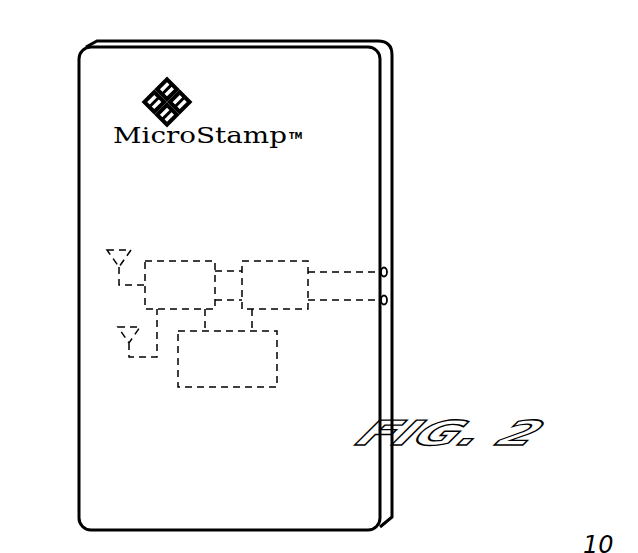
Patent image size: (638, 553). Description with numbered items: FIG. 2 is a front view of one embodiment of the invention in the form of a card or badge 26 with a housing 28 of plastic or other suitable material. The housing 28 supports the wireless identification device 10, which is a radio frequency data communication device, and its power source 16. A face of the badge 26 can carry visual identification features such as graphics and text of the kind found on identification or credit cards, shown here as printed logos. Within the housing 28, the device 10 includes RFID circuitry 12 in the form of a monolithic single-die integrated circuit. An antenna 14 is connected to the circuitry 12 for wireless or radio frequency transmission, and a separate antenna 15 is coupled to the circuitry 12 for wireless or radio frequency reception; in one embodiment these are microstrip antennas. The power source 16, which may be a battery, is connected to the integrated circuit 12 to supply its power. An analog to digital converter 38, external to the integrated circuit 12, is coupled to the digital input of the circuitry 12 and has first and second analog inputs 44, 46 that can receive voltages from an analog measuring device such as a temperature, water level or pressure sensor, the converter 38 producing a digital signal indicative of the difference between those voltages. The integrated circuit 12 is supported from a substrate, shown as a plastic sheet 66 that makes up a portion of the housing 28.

The wireless identification device 10 is at (234, 316).
The RFID circuitry 12 is at (181, 261).
The antenna 14 is at (122, 339).
The antenna 15 is at (125, 249).
The power source 16 is at (207, 388).
The card or badge 26 is at (342, 182).
The housing 28 is at (113, 467).
The analog to digital converter 38 is at (289, 261).
The first analog input 44 is at (388, 271).
The second analog input 46 is at (388, 302).
The plastic sheet 66 is at (160, 45).